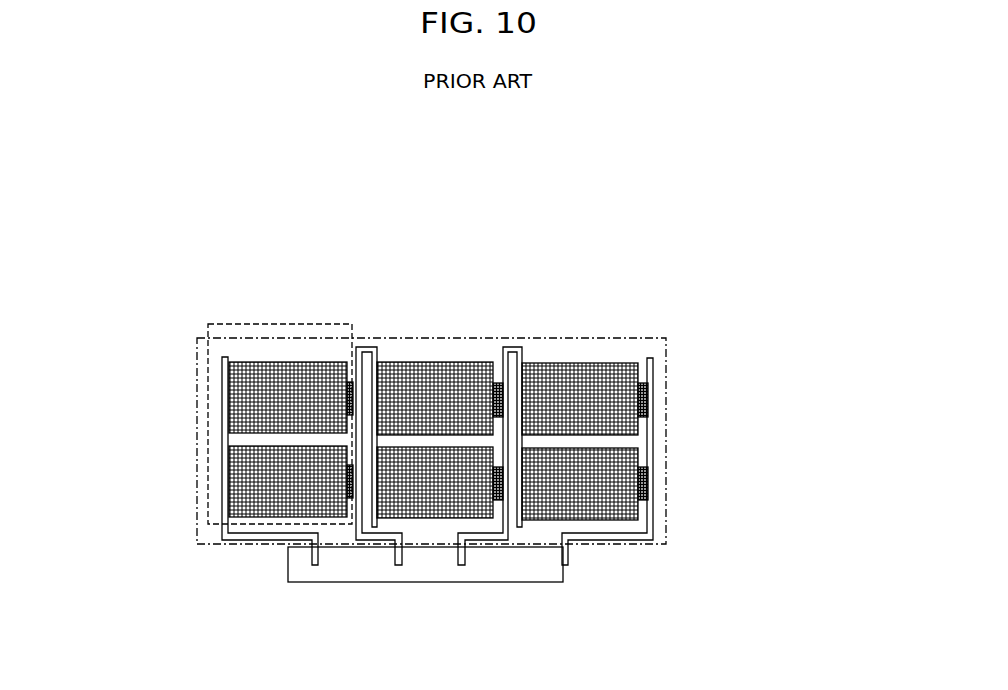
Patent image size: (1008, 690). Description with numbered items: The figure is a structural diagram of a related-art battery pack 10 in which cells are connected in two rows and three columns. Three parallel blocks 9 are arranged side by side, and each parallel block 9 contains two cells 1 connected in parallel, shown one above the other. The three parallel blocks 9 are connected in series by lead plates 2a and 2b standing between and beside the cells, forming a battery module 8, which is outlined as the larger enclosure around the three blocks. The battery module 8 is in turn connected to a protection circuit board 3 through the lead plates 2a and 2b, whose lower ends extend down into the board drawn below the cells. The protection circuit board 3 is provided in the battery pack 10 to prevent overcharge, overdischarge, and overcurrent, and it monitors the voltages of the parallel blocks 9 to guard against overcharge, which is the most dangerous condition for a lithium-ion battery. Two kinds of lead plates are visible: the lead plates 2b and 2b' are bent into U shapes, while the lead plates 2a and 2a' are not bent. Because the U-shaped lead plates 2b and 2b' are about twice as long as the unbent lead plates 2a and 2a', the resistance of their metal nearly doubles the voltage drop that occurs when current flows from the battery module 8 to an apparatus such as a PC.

The cell 1 is at (245, 396).
The lead plate 2a is at (171, 461).
The lead plate 2a' is at (613, 491).
The lead plate 2b is at (439, 428).
The lead plate 2b' is at (516, 425).
The protection circuit board 3 is at (333, 572).
The battery module 8 is at (635, 336).
The parallel block 9 is at (270, 326).
The battery pack 10 is at (712, 328).